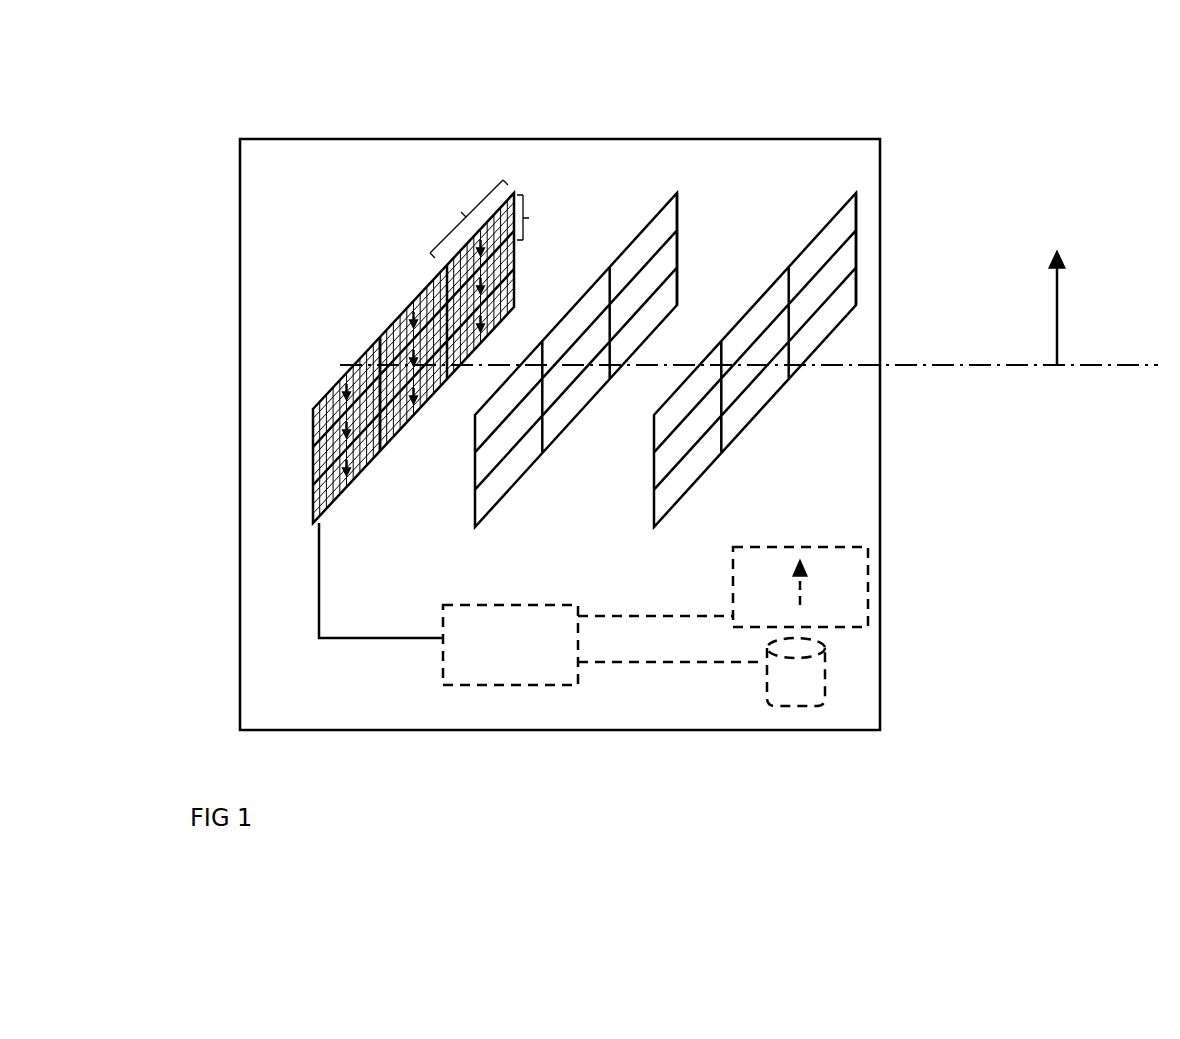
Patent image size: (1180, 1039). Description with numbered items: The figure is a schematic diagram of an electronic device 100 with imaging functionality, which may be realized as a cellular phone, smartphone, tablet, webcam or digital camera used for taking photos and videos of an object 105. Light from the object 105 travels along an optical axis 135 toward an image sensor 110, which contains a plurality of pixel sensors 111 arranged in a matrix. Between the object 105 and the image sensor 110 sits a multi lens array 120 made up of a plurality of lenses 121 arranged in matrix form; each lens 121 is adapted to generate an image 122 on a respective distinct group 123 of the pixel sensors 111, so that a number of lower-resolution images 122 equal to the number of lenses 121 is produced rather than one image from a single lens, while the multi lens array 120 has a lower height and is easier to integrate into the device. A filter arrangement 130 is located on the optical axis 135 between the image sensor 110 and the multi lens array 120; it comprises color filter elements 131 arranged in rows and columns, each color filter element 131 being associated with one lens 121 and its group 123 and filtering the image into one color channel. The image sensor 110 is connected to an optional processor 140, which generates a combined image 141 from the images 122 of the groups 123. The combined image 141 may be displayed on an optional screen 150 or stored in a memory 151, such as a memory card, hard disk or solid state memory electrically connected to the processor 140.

The electronic device 100 is at (882, 153).
The object 105 is at (1058, 300).
The image sensor 110 is at (408, 427).
The pixel sensors 111 is at (312, 421).
The multi lens array 120 is at (765, 403).
The lenses 121 is at (843, 224).
The image 122 is at (480, 247).
The group of pixel sensors 123 is at (546, 160).
The filter arrangement 130 is at (575, 415).
The color filter elements 131 is at (667, 223).
The optical axis 135 is at (1098, 367).
The processor 140 is at (522, 685).
The combined image 141 is at (808, 577).
The screen 150 is at (870, 610).
The memory 151 is at (825, 680).